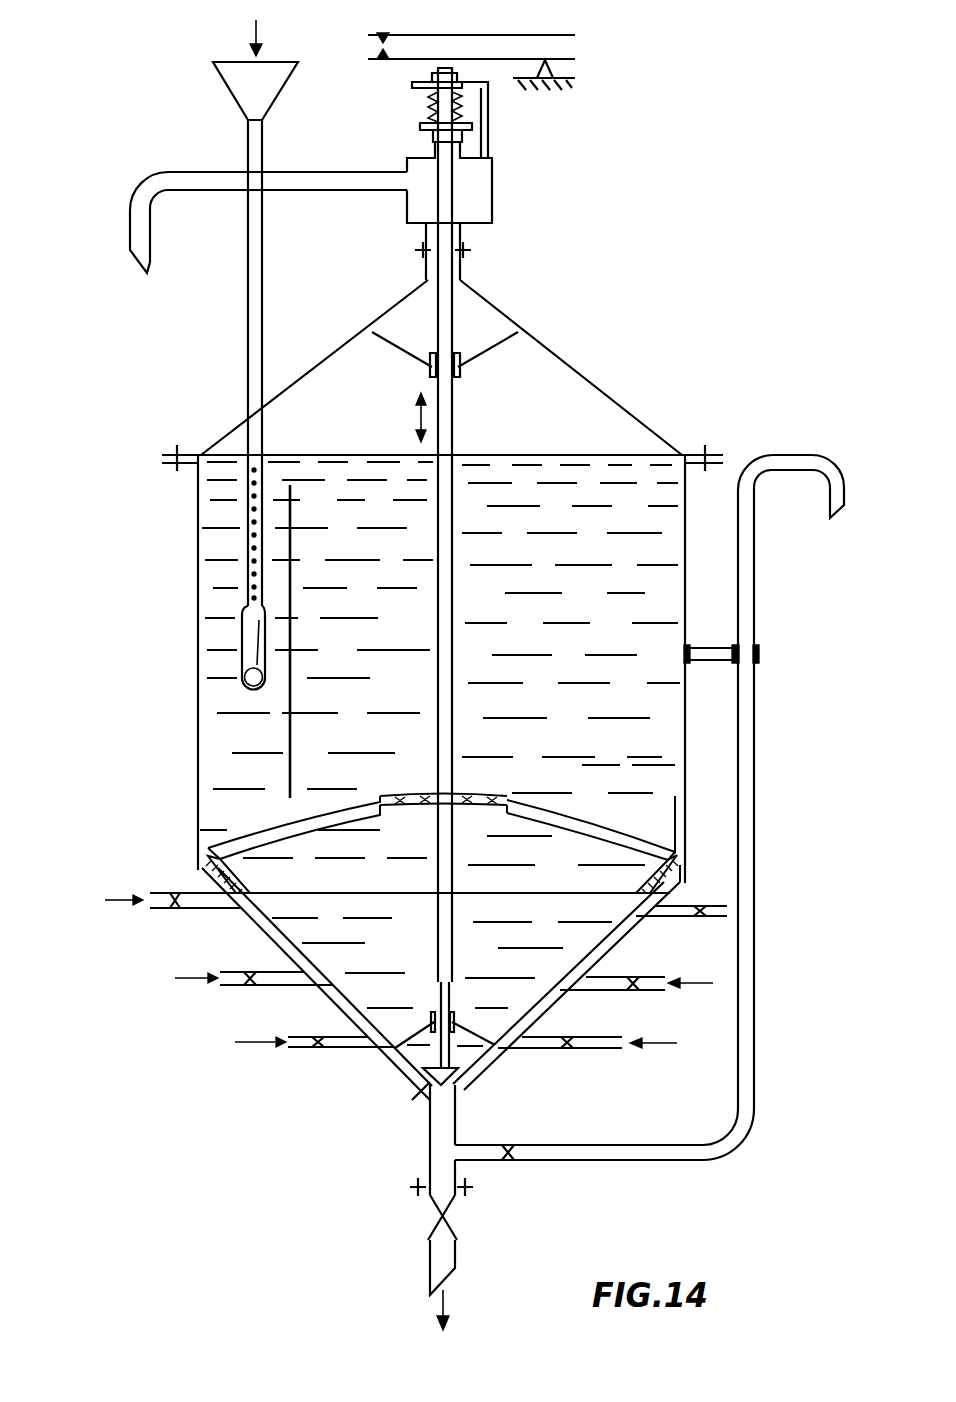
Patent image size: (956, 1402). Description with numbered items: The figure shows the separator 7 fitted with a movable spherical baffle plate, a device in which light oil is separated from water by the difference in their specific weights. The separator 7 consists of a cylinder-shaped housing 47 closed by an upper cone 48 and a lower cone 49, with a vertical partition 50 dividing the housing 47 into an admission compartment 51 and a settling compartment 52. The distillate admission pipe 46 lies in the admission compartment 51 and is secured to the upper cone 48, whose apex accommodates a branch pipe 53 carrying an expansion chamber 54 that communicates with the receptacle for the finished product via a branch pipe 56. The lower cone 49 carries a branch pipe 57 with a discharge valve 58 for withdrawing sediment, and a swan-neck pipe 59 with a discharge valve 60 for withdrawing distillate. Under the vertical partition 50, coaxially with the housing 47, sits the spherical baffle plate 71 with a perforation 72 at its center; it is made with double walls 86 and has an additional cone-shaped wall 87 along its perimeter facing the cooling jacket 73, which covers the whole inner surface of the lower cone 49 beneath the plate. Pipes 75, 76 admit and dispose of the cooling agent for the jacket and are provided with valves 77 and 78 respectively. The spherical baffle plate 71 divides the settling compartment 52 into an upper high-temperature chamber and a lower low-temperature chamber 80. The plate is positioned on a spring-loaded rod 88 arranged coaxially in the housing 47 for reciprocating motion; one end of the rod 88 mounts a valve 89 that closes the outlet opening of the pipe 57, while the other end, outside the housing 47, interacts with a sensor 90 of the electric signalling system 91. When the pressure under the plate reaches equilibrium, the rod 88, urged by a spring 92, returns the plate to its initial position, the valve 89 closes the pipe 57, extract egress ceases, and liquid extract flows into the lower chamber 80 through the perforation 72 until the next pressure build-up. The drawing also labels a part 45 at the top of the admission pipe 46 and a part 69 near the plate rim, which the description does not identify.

The separator 7 is at (198, 587).
The funnel 45 is at (237, 82).
The distillate admission pipe 46 is at (248, 135).
The cylinder-shaped housing 47 is at (198, 678).
The upper cone 48 is at (223, 437).
The lower cone 49 is at (568, 1005).
The vertical partition 50 is at (291, 510).
The admission compartment 51 is at (220, 734).
The settling compartment 52 is at (667, 553).
The branch pipe 53 is at (458, 272).
The expansion chamber 54 is at (480, 200).
The branch pipe 56 is at (150, 190).
The branch pipe 57 is at (440, 1133).
The discharge valve 58 is at (430, 1222).
The swan-neck pipe 59 is at (553, 1152).
The discharge valve 60 is at (508, 1162).
The seal 69 is at (684, 868).
The spherical baffle plate 71 is at (242, 832).
The perforation 72 is at (495, 797).
The cooling jacket 73 is at (400, 1063).
The pipe 75 is at (235, 972).
The pipe 76 is at (647, 977).
The valve 77 is at (170, 890).
The valve 78 is at (706, 917).
The lower low-temperature chamber 80 is at (500, 1053).
The double walls 86 is at (593, 822).
The cone-shaped wall 87 is at (683, 862).
The spring-loaded rod 88 is at (445, 445).
The valve 89 is at (428, 1088).
The sensor 90 is at (465, 88).
The electric signalling system 91 is at (392, 62).
The spring 92 is at (430, 108).